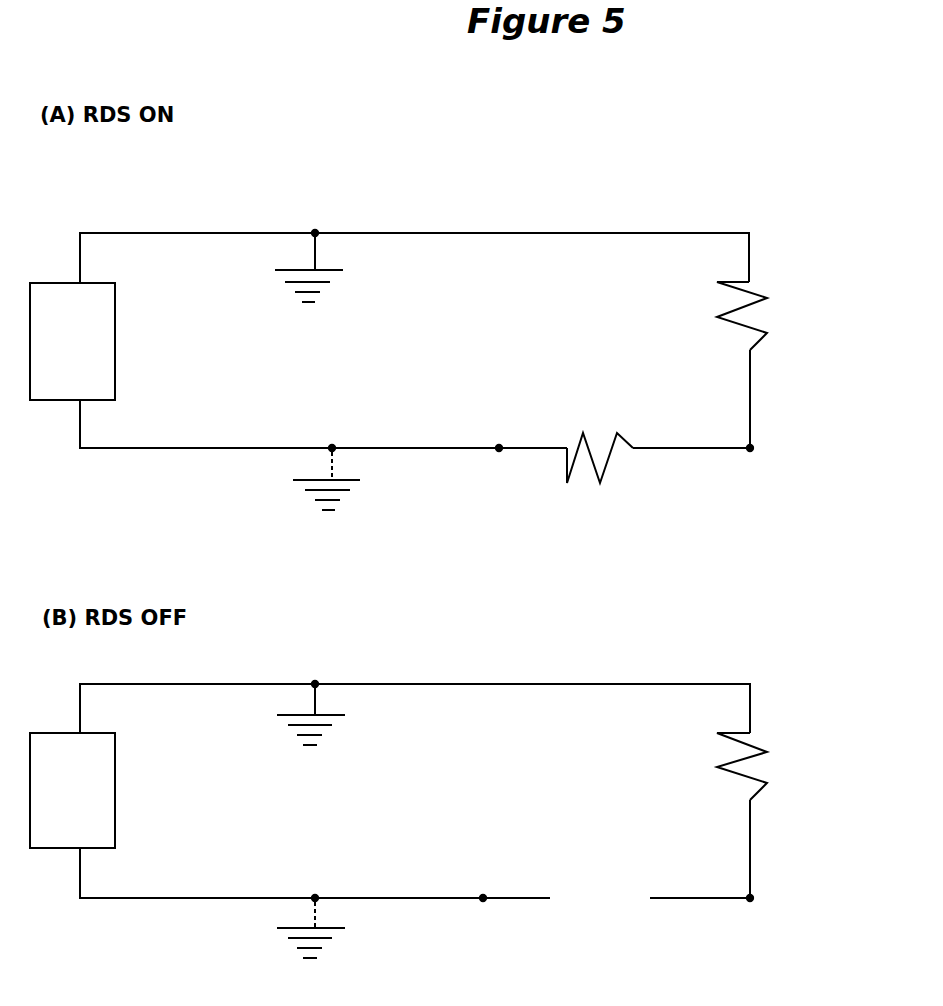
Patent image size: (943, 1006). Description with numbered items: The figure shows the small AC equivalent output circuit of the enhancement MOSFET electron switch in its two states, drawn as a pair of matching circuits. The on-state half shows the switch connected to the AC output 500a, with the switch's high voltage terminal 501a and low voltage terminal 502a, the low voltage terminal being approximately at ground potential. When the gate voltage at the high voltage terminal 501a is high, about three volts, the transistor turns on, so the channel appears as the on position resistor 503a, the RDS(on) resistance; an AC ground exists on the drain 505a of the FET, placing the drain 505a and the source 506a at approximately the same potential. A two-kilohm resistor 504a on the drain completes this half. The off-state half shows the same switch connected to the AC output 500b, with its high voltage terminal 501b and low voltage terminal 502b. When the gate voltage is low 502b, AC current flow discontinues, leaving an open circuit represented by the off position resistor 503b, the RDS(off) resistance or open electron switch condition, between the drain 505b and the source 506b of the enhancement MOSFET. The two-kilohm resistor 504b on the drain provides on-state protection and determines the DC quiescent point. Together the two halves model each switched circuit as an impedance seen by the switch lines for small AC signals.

The AC output 500a is at (115, 343).
The high voltage terminal of switch (on) 501a is at (332, 210).
The low voltage terminal of switch (on) 502a is at (332, 428).
The on position resistor 503a is at (603, 497).
The 2 kΩ resistor 504a is at (660, 308).
The drain of enhancement MOSFET switch (on) 505a is at (765, 468).
The source of enhancement MOSFET switch (on) 506a is at (477, 432).
The AC output 500b is at (115, 792).
The high voltage terminal of switch (off) 501b is at (332, 660).
The low voltage terminal of switch (off) 502b is at (332, 877).
The off position resistor 503b is at (583, 927).
The 2 kΩ resistor 504b is at (812, 768).
The drain of enhancement MOSFET switch (off) 505b is at (765, 918).
The source of enhancement MOSFET switch (off) 506b is at (478, 882).